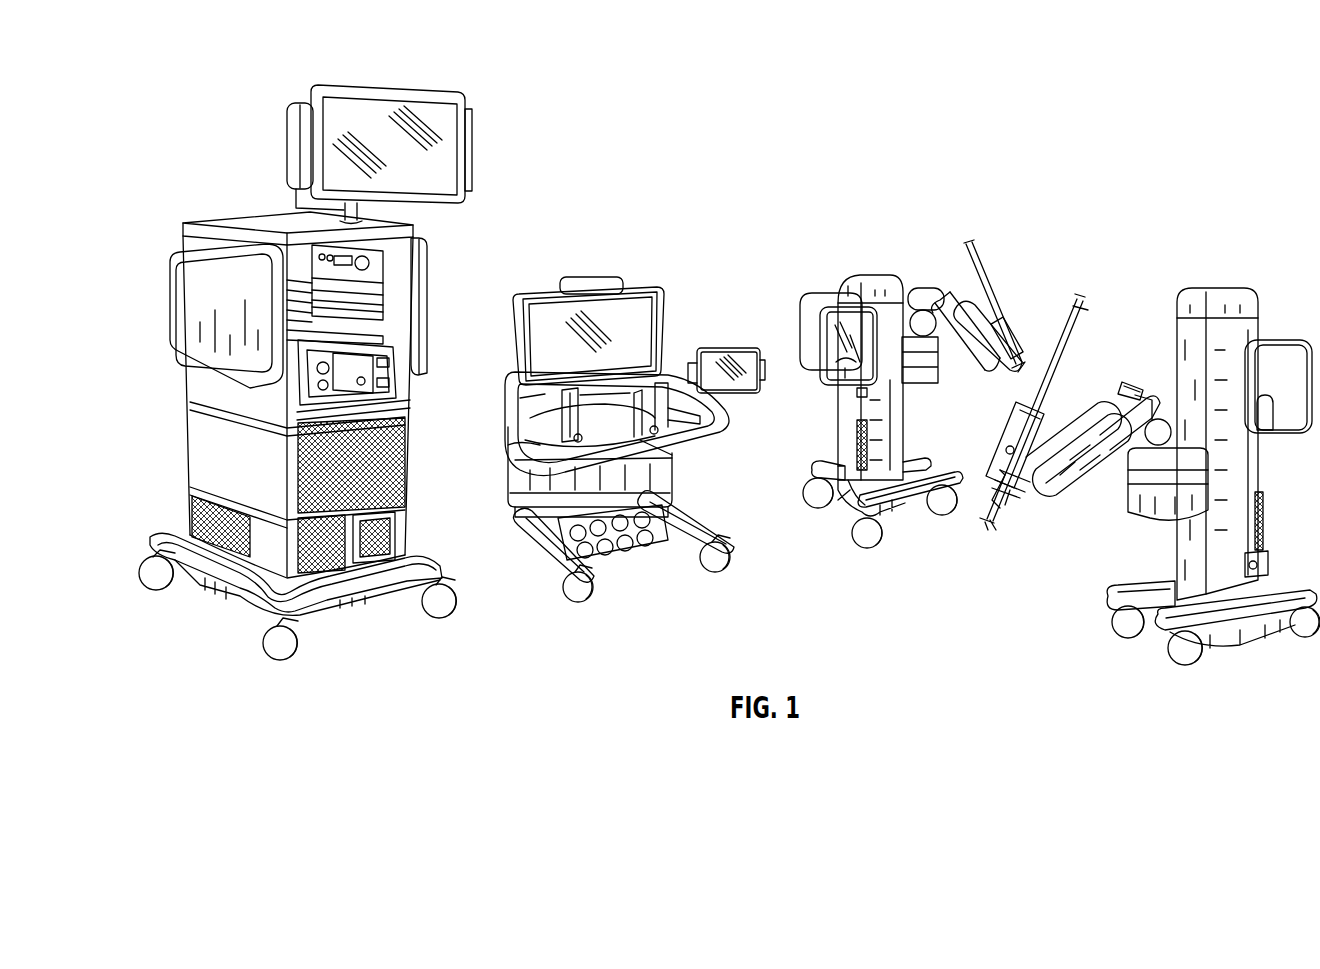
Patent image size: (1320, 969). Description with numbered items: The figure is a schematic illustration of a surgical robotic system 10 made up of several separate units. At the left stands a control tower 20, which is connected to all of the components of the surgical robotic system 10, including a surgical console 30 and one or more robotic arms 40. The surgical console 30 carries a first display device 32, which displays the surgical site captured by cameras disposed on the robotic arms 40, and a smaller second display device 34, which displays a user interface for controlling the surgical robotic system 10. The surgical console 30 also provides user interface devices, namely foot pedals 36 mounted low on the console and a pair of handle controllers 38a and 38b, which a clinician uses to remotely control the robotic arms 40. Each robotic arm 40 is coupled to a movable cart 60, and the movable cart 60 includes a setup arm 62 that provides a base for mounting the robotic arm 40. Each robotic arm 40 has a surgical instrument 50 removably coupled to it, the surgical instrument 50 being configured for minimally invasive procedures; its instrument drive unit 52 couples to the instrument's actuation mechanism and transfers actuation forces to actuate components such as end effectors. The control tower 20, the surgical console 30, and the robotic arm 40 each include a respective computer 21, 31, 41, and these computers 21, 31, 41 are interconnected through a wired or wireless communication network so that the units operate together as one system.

The surgical robotic system 10 is at (224, 75).
The control tower 20 is at (205, 438).
The computer 21 is at (395, 458).
The surgical console 30 is at (680, 332).
The computer 31 is at (513, 474).
The first display device 32 is at (638, 290).
The second display device 34 is at (730, 348).
The foot pedals 36 is at (634, 562).
The handle controller 38a is at (512, 378).
The handle controller 38b is at (728, 426).
The robotic arm 40 is at (953, 288).
The computer 41 is at (890, 440).
The surgical instrument 50 is at (1000, 514).
The instrument drive unit 52 is at (1020, 424).
The movable cart 60 is at (880, 273).
The setup arm 62 is at (1185, 560).